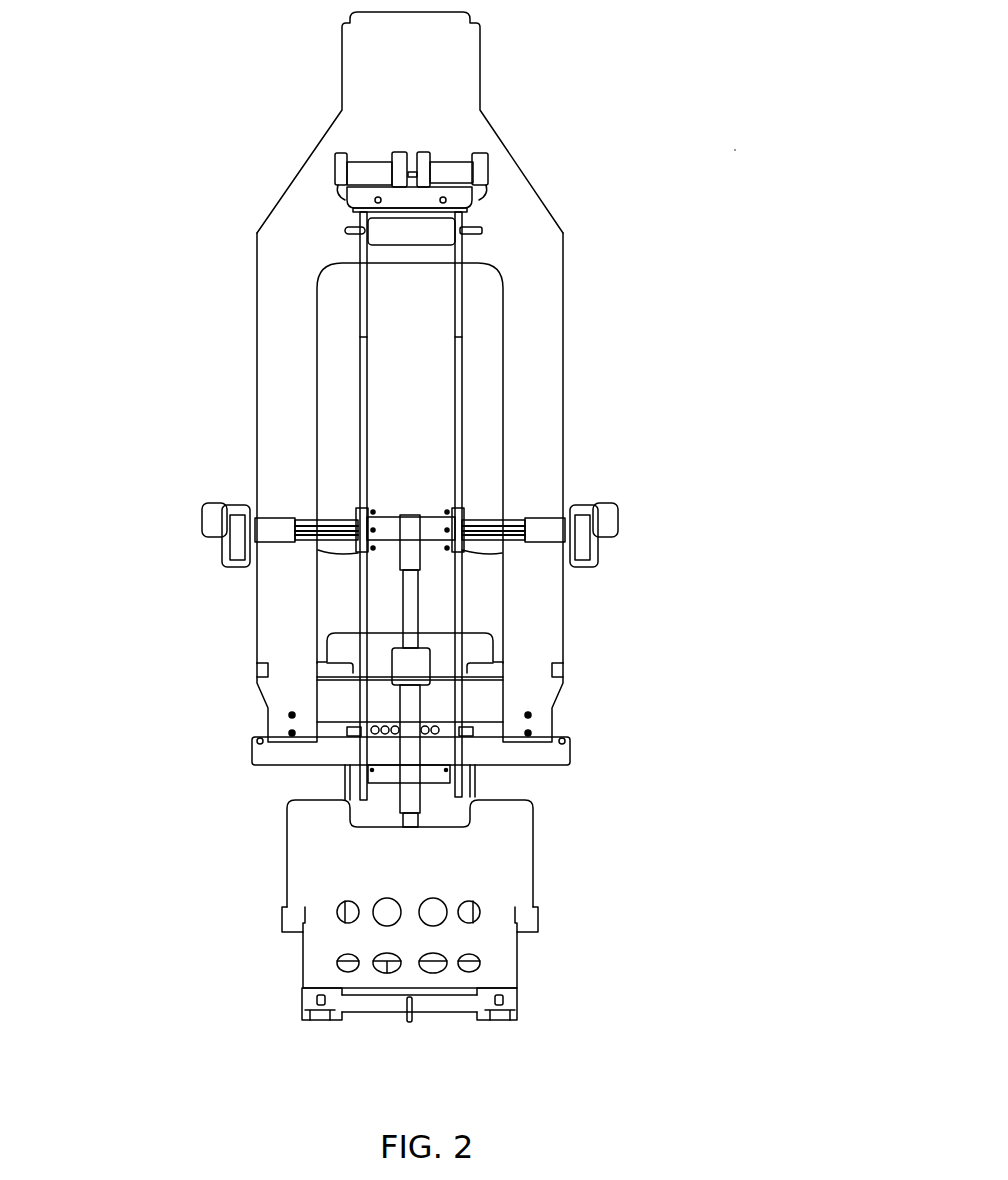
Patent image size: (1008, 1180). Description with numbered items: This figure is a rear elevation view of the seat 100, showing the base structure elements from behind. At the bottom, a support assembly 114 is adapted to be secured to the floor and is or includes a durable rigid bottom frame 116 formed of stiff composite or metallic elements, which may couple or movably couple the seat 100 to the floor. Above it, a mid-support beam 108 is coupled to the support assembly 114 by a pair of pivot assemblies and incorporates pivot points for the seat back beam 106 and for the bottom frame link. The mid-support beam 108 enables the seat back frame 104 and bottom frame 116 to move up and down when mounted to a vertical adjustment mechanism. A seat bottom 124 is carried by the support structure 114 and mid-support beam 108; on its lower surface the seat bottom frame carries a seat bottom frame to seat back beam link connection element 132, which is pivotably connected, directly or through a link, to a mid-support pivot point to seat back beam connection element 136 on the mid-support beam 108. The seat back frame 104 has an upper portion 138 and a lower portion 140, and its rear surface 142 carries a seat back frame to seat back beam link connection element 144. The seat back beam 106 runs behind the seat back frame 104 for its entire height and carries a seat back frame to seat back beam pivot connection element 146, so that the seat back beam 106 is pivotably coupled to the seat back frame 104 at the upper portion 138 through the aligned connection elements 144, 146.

The seat 100 is at (734, 151).
The seat back frame 104 is at (550, 337).
The seat back beam 106 is at (363, 403).
The mid-support beam 108 is at (473, 790).
The support assembly 114 is at (500, 848).
The bottom frame 116 is at (303, 878).
The seat bottom 124 is at (480, 695).
The seat bottom frame to seat back beam link connection element 132 is at (367, 753).
The mid-support pivot point to seat back beam connection element 136 is at (387, 770).
The upper portion 138 is at (273, 203).
The lower portion 140 is at (290, 690).
The rear surface 142 is at (433, 105).
The seat back frame to seat back beam link connection element 144 is at (377, 230).
The seat back frame to seat back beam pivot connection element 146 is at (413, 237).